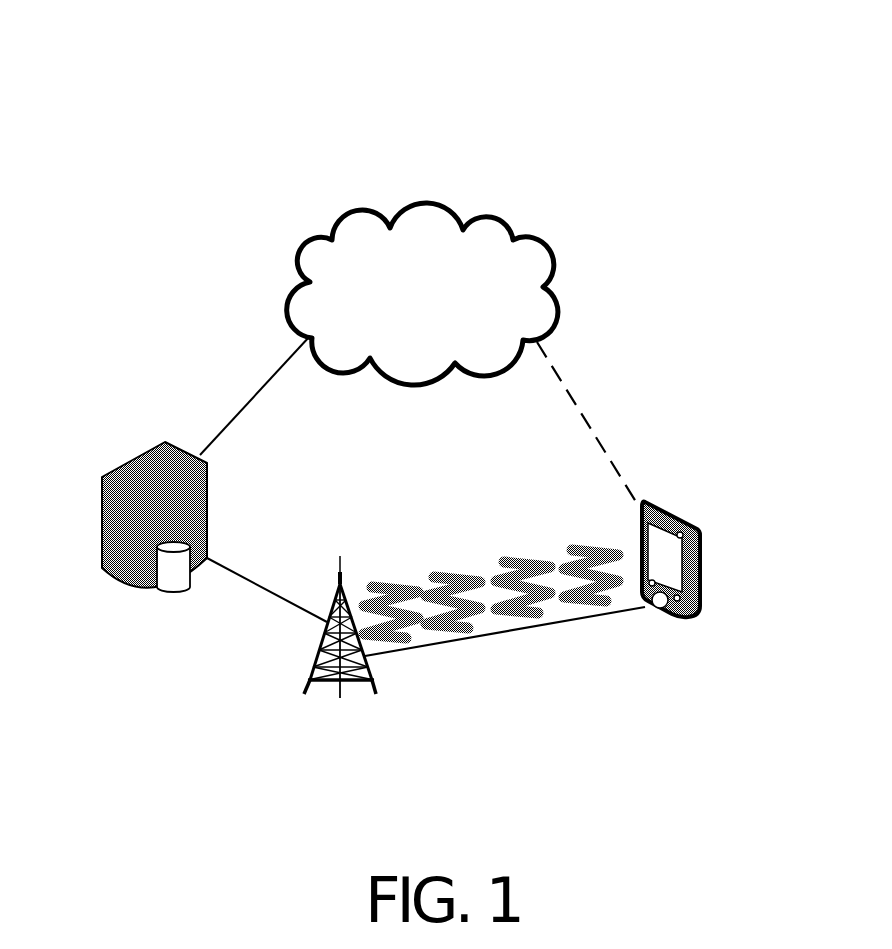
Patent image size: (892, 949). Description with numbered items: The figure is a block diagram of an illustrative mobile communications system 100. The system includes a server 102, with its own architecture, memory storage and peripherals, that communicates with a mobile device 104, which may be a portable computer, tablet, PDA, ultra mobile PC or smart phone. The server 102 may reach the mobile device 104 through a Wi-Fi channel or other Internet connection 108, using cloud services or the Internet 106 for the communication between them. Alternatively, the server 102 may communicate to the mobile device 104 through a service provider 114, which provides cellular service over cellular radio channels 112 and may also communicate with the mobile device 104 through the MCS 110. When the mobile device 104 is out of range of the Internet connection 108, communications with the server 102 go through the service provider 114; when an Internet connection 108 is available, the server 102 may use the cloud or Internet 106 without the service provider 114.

The mobile communications system 100 is at (417, 97).
The server 102 is at (207, 538).
The mobile device 104 is at (685, 588).
The cloud services or the Internet 106 is at (448, 268).
The Internet connection 108 is at (588, 425).
The MCS 110 is at (453, 643).
The cellular radio channels 112 is at (535, 560).
The service provider 114 is at (340, 700).